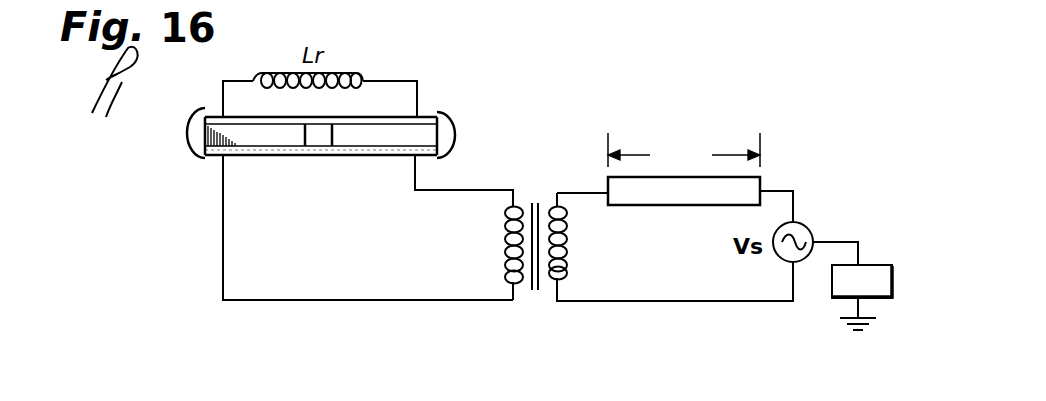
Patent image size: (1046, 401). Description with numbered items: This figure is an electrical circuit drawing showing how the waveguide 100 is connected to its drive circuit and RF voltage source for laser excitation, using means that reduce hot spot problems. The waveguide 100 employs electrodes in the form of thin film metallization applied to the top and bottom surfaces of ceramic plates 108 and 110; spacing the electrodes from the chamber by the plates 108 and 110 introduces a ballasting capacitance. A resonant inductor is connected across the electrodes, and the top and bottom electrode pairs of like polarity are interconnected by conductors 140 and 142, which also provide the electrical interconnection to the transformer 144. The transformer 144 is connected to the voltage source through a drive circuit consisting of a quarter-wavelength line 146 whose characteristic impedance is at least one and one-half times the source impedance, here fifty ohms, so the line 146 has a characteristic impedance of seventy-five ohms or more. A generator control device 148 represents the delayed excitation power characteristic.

The waveguide 100 is at (413, 130).
The ceramic plate 108 is at (289, 98).
The ceramic plate 110 is at (273, 157).
The conductor 140 is at (183, 137).
The conductor 142 is at (455, 143).
The transformer 144 is at (566, 260).
The quarter-wavelength line 146 is at (703, 207).
The generator control device 148 is at (920, 237).